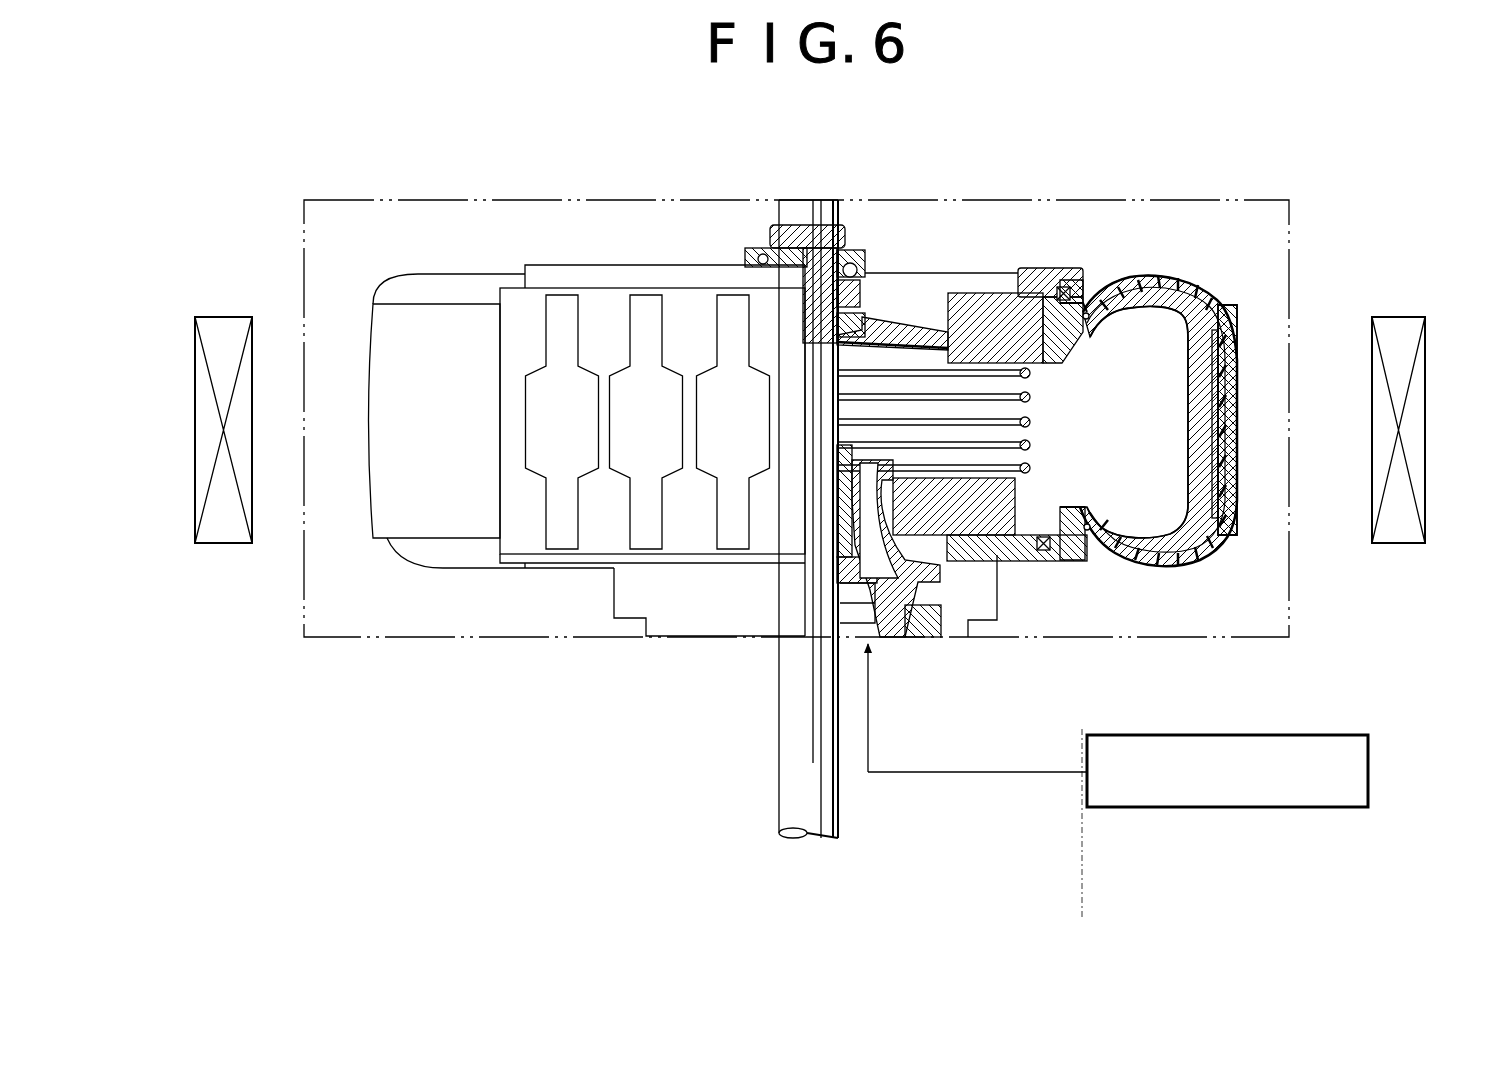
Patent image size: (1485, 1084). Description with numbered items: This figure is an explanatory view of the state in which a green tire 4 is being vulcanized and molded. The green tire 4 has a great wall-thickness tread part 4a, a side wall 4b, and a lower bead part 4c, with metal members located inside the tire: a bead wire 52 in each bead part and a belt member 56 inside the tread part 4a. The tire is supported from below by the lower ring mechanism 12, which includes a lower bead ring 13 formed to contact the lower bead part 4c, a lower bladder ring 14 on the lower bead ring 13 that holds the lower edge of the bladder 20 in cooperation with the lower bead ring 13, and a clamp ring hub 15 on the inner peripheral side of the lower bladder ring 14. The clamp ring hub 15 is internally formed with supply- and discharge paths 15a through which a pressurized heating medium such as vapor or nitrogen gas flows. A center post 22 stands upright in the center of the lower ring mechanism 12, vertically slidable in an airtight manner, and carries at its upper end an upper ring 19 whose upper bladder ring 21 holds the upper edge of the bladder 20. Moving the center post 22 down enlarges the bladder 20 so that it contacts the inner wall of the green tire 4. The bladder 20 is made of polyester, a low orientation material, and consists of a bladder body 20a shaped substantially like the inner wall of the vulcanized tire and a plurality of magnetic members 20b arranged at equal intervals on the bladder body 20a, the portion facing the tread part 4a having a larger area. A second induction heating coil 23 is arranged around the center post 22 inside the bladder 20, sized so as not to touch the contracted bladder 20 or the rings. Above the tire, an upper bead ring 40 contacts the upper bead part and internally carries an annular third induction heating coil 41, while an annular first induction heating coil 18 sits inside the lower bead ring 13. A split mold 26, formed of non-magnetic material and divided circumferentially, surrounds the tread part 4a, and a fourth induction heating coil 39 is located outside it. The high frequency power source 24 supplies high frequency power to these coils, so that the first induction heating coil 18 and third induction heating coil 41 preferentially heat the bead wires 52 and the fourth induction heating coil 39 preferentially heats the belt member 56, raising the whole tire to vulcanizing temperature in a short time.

The green tire 4 is at (1199, 418).
The tread part 4a is at (1238, 380).
The side wall 4b is at (1182, 557).
The lower bead part 4c is at (1088, 522).
The lower ring mechanism 12 is at (697, 646).
The lower bead ring 13 is at (1061, 563).
The lower bladder ring 14 is at (1031, 468).
The clamp ring hub 15 is at (884, 639).
The supply- and discharge paths 15a is at (924, 639).
The first induction heating coil 18 is at (1040, 552).
The upper ring 19 is at (883, 303).
The bladder 20 is at (893, 392).
The bladder body 20a is at (511, 304).
The magnetic members 20b is at (727, 315).
The upper bladder ring 21 is at (915, 330).
The center post 22 is at (791, 789).
The second induction heating coil 23 is at (1042, 434).
The high frequency power source 24 is at (1222, 807).
The split mold 26 is at (944, 197).
The fourth induction heating coil 39 is at (1397, 317).
The upper bead ring 40 is at (1035, 267).
The third induction heating coil 41 is at (1069, 283).
The bead wire 52 is at (1082, 320).
The belt member 56 is at (1225, 415).